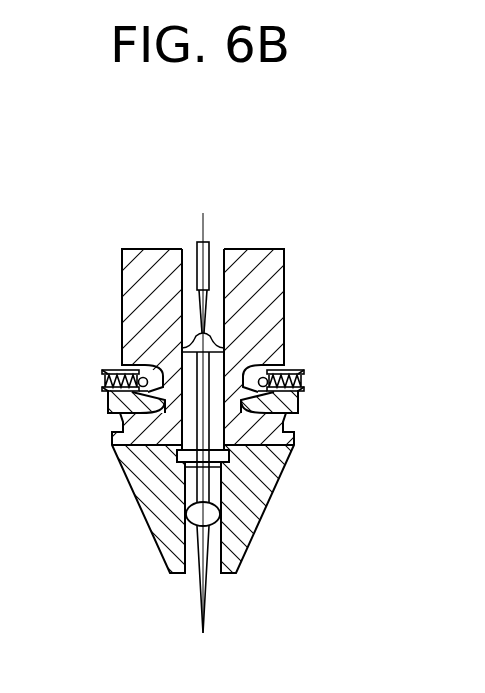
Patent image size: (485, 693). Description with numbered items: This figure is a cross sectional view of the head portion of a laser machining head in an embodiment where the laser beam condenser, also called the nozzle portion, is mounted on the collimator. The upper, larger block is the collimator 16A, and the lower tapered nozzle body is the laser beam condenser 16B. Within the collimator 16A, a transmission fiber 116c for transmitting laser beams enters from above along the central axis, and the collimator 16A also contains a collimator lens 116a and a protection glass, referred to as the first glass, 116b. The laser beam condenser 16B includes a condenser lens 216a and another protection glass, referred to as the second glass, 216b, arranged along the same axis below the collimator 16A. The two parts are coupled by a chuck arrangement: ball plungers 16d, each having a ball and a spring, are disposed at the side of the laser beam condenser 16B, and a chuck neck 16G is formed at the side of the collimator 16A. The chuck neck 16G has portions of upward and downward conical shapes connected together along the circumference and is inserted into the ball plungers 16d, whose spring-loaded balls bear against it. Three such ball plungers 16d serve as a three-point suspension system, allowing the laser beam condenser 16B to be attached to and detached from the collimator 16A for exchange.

The collimator 16A is at (275, 257).
The laser beam condenser 16B is at (157, 520).
The ball plungers 16d is at (300, 372).
The chuck neck 16G is at (243, 382).
The collimator lens 116a is at (213, 337).
The protection glass (first glass) 116b is at (226, 451).
The transmission fiber 116c is at (197, 258).
The condenser lens 216a is at (218, 513).
The protection glass (second glass) 216b is at (218, 467).